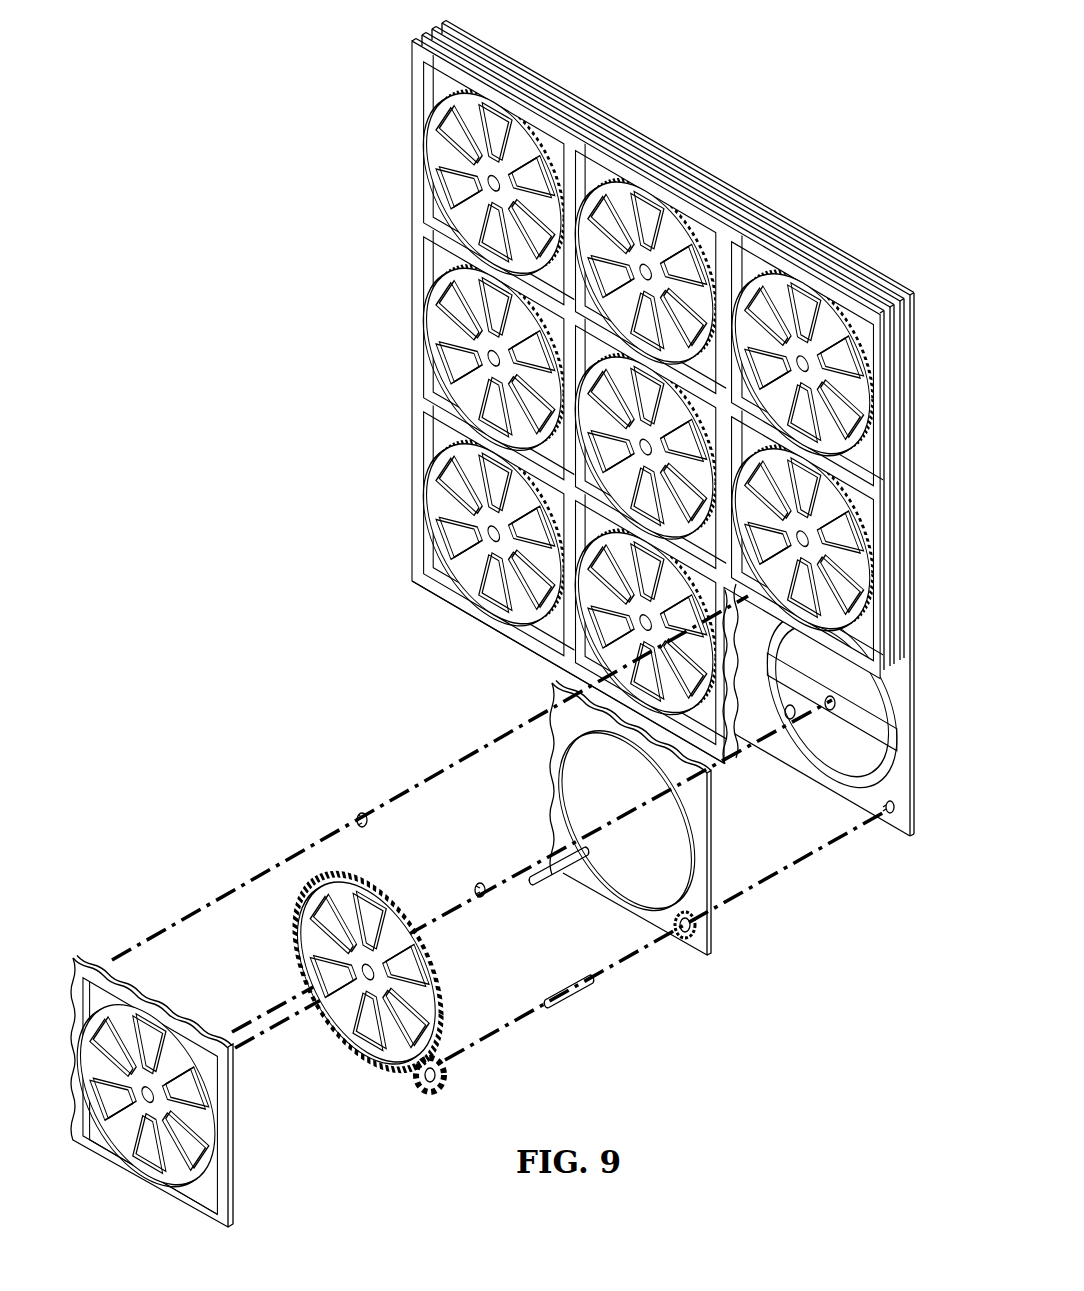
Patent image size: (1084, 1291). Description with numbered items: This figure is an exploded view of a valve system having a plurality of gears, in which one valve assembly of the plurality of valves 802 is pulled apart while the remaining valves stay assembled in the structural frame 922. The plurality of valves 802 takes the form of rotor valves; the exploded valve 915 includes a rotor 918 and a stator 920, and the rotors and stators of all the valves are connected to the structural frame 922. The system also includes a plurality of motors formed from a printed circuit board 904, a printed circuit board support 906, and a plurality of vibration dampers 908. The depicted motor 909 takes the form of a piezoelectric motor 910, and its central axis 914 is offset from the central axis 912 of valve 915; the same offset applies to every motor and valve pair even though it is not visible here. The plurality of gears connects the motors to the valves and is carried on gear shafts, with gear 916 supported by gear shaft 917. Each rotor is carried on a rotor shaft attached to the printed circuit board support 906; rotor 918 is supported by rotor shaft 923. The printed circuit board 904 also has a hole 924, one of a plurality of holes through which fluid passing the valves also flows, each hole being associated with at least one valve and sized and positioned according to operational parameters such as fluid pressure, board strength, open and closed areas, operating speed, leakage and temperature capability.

The plurality of valves 802 is at (589, 447).
The printed circuit board 904 is at (631, 842).
The printed circuit board support 906 is at (884, 818).
The plurality of vibration dampers 908 is at (362, 808).
The motor 909 is at (687, 940).
The piezoelectric motor 910 is at (352, 52).
The central axis of valve 912 is at (455, 925).
The central axis of motor 914 is at (500, 1035).
The valve 915 is at (196, 886).
The gear 916 is at (430, 1098).
The gear shaft 917 is at (574, 1003).
The rotor 918 is at (292, 945).
The stator 920 is at (208, 1128).
The structural frame 922 is at (525, 648).
The rotor shaft 923 is at (548, 892).
The hole 924 is at (556, 800).